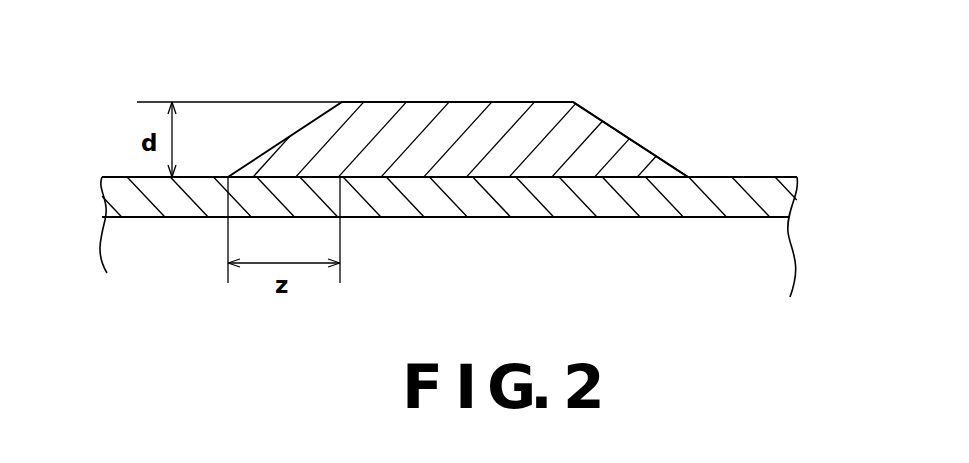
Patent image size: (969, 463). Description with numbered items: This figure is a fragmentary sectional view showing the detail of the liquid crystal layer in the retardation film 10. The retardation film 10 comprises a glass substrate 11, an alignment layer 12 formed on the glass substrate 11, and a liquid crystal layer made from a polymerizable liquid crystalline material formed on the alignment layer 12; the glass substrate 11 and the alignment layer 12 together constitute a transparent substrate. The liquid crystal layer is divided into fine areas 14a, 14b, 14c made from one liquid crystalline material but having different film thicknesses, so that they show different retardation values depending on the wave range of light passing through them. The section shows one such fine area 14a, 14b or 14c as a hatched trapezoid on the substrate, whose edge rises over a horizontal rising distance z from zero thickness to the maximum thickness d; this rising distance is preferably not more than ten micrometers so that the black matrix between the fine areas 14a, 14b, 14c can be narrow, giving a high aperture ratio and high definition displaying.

The retardation film 10 is at (635, 113).
The glass substrate 11 is at (770, 259).
The alignment layer 12 is at (752, 188).
The fine area 14a is at (436, 113).
The fine area 14b is at (457, 74).
The fine area 14c is at (624, 111).